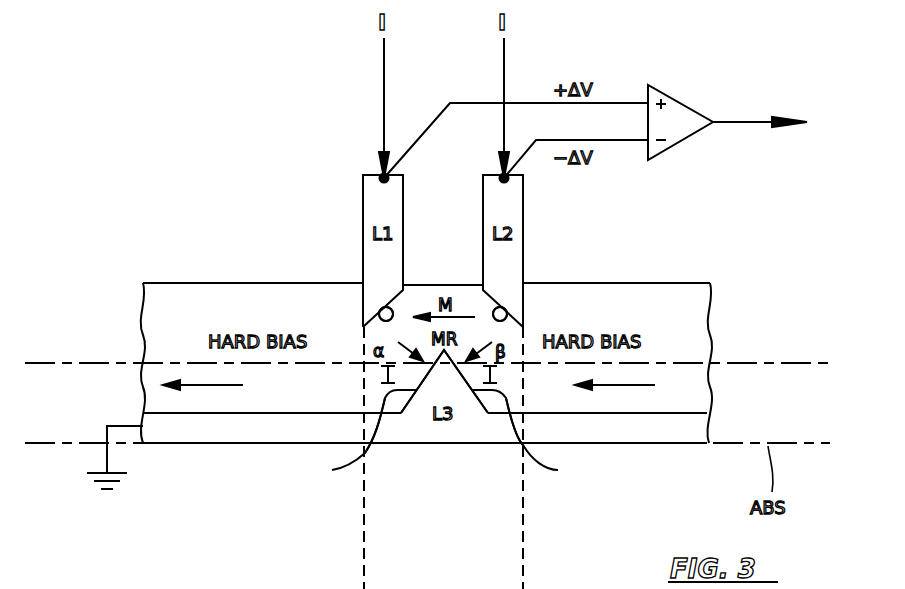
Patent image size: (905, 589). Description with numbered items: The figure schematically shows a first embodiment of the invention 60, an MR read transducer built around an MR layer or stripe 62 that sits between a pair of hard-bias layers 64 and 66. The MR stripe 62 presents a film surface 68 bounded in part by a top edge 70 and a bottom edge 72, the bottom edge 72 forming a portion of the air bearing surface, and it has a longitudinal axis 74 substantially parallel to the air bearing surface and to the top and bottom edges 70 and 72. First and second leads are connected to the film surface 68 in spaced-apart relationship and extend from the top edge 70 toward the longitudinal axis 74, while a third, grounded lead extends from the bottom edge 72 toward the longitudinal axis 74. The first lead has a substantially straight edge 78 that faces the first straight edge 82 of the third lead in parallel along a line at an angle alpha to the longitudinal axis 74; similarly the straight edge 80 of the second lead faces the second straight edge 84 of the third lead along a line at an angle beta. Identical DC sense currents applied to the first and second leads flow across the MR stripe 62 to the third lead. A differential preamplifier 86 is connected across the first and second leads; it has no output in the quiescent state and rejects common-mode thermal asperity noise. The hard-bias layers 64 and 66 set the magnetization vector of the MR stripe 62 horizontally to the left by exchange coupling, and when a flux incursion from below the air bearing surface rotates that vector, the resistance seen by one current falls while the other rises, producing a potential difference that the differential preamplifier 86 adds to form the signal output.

The first embodiment of the invention 60 is at (270, 152).
The MR layer or stripe 62 is at (506, 378).
The hard-bias layer 64 is at (657, 290).
The hard-bias layer 66 is at (196, 290).
The film surface 68 is at (412, 290).
The top edge 70 is at (467, 283).
The bottom edge 72 is at (438, 445).
The longitudinal axis 74 is at (50, 363).
The straight edge 78 is at (384, 330).
The straight edge 80 is at (505, 318).
The first straight edge 82 is at (365, 453).
The second straight edge 84 is at (523, 445).
The differential preamplifier 86 is at (672, 98).